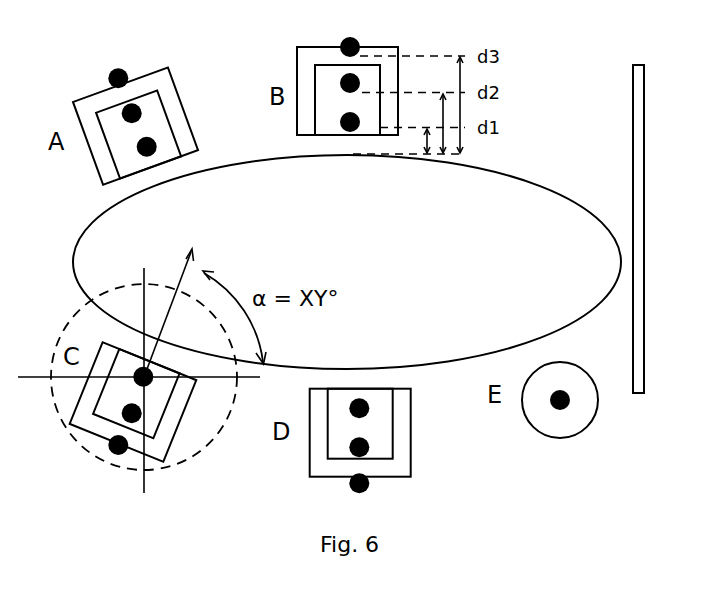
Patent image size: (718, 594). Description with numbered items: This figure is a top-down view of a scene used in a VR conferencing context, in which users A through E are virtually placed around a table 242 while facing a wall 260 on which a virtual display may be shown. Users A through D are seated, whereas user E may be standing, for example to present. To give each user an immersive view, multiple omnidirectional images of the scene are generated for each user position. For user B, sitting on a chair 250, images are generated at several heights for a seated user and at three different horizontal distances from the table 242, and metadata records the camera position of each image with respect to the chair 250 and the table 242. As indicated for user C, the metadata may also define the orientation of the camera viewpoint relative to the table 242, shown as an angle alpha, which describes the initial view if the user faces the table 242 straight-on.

The table 242 is at (363, 264).
The chair 250 is at (297, 64).
The wall 260 is at (633, 200).